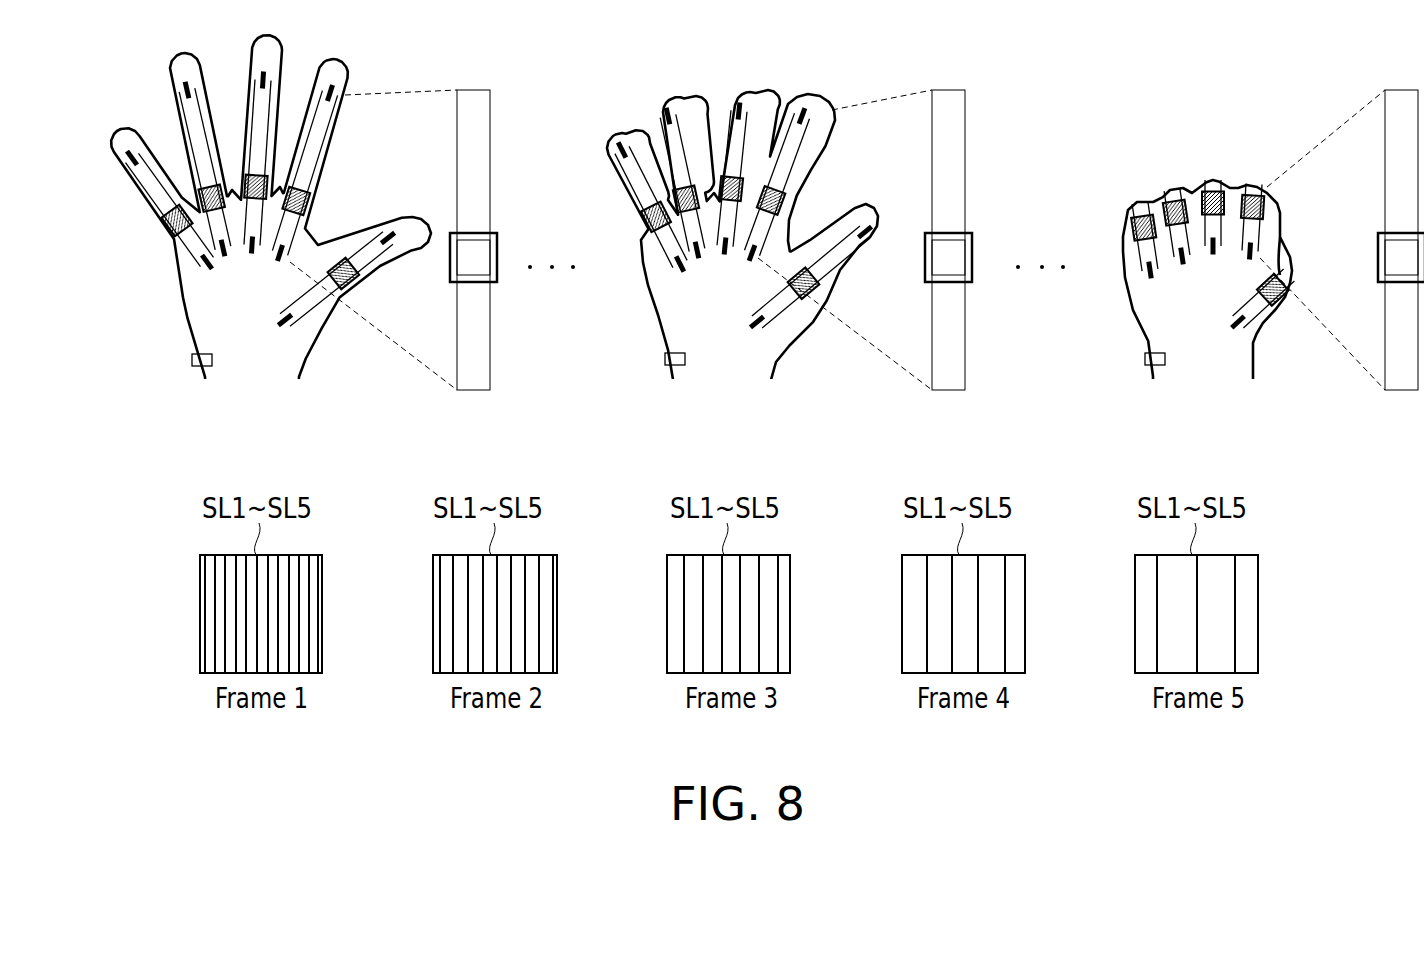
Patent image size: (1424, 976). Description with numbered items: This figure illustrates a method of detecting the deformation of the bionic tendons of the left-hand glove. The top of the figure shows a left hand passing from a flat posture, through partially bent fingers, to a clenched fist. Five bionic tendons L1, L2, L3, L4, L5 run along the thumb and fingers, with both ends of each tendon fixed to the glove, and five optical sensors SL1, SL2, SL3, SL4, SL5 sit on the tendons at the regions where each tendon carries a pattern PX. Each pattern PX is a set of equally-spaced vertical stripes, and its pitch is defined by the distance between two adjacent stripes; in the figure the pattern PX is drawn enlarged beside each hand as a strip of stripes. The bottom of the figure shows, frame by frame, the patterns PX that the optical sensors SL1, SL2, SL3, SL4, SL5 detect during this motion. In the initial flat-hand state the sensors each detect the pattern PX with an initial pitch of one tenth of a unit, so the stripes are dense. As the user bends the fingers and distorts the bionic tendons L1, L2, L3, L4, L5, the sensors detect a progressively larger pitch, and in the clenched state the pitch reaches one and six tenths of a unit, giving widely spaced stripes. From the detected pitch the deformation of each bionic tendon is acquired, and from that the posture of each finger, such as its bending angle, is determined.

The optical sensor SL1 is at (336, 295).
The optical sensor SL2 is at (308, 197).
The optical sensor SL3 is at (250, 174).
The optical sensor SL4 is at (203, 188).
The optical sensor SL5 is at (168, 227).
The bionic tendon L1 is at (295, 318).
The bionic tendon L2 is at (280, 258).
The bionic tendon L3 is at (252, 246).
The bionic tendon L4 is at (223, 246).
The bionic tendon L5 is at (198, 261).
The pattern PX is at (937, 240).